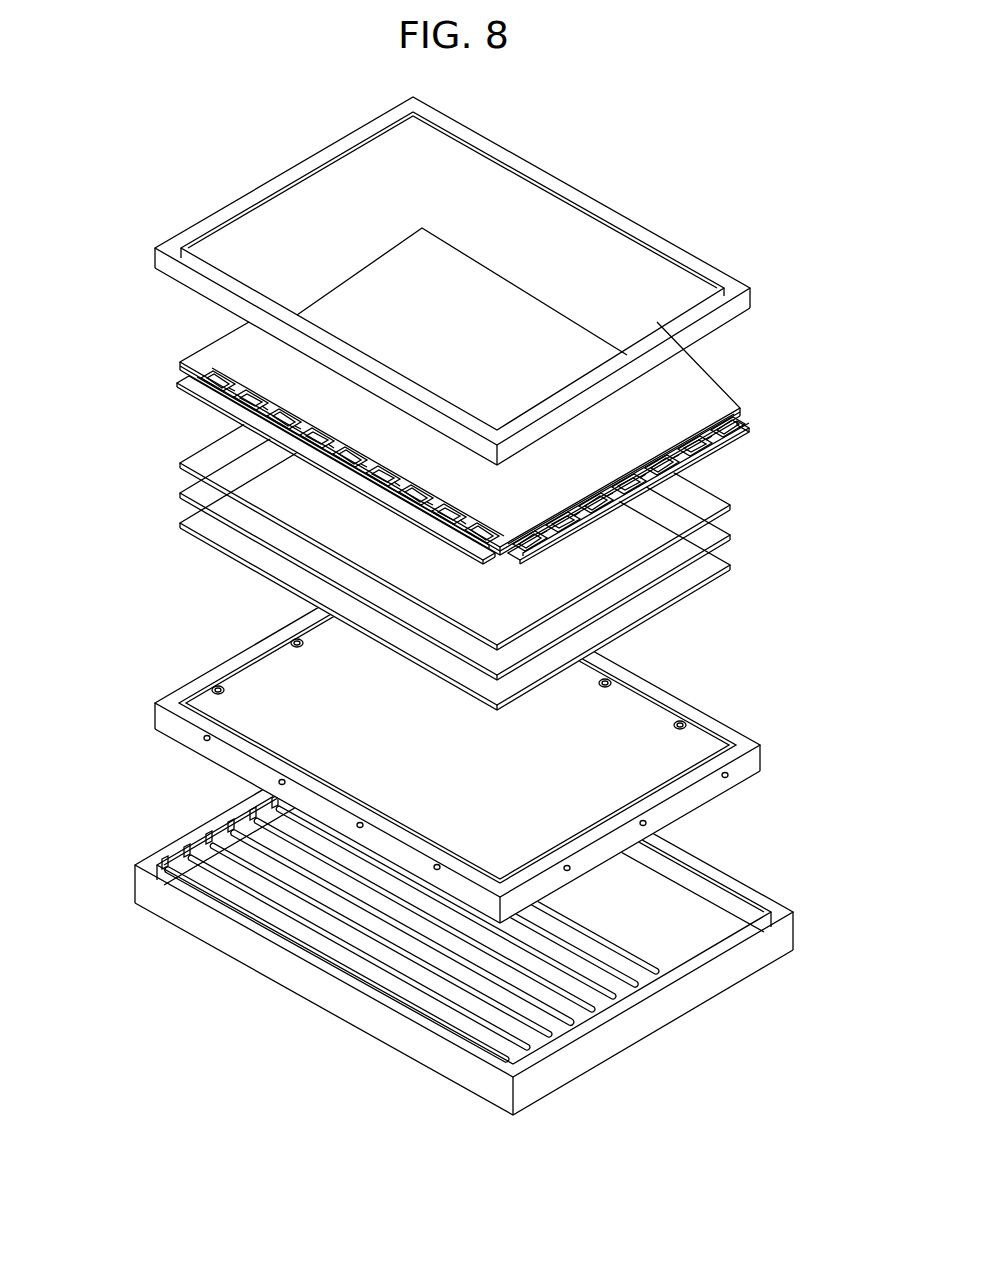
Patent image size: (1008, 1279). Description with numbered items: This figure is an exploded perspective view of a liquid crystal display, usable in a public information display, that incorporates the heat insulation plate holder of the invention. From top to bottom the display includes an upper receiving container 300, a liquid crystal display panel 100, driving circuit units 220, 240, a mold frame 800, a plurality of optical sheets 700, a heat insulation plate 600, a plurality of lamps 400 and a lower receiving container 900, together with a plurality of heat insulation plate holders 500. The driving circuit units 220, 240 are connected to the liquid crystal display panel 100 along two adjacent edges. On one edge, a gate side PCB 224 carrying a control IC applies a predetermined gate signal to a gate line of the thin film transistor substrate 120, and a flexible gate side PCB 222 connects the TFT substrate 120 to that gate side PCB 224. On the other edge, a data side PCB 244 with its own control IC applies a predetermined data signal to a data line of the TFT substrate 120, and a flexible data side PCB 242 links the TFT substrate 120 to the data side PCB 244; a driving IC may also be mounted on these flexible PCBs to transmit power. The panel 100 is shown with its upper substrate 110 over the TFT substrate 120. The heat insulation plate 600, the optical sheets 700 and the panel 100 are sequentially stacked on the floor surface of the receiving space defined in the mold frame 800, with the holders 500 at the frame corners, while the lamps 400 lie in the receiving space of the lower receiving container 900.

The upper receiving container 300 is at (760, 298).
The liquid crystal display panel 100 is at (541, 391).
The first substrate 110 is at (680, 390).
The thin film transistor substrate 120 is at (723, 398).
The driving circuit unit 240 is at (264, 438).
The flexible data side PCB 242 is at (212, 364).
The data side PCB 244 is at (188, 378).
The driving circuit unit 220 is at (705, 488).
The flexible gate side PCB 222 is at (727, 415).
The gate side PCB 224 is at (727, 440).
The optical sheets 700 is at (733, 567).
The mold frame 800 is at (762, 746).
The heat insulation plate 600 is at (635, 720).
The heat insulation plate holders 500 is at (218, 688).
The lower receiving container 900 is at (785, 933).
The lamps 400 is at (668, 960).